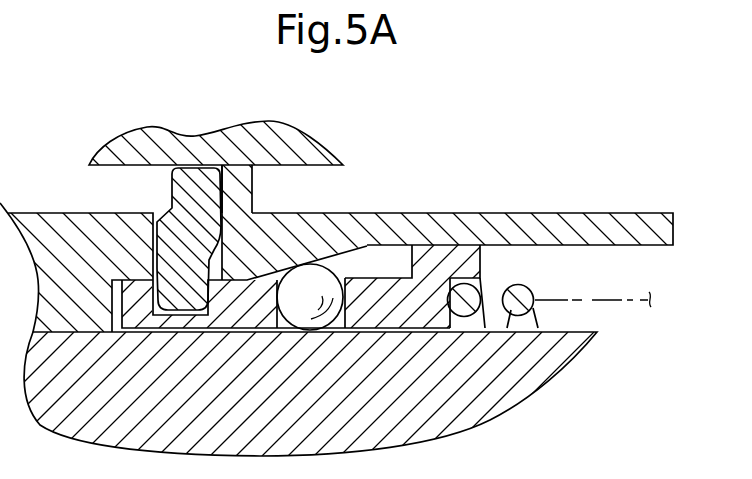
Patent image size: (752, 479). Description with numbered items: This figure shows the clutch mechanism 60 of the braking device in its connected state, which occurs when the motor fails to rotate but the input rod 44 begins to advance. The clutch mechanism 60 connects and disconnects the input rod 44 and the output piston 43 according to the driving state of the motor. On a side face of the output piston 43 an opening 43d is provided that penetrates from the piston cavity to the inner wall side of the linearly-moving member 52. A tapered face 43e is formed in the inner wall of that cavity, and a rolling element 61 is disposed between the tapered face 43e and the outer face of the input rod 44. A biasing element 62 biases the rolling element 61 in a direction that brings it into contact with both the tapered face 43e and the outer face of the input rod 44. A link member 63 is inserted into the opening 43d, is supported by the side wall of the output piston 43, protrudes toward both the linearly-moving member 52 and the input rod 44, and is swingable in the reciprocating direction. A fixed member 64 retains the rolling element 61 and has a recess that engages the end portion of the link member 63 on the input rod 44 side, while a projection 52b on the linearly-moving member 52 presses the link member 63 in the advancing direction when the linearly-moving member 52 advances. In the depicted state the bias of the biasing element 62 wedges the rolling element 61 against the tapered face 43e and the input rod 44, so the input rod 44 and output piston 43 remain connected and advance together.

The output piston 43 is at (512, 217).
The opening 43d is at (221, 200).
The tapered face 43e is at (364, 303).
The input rod 44 is at (515, 375).
The linearly-moving member 52 is at (160, 140).
The projection 52b is at (253, 190).
The clutch mechanism 60 is at (482, 168).
The rolling element 61 is at (289, 311).
The biasing element 62 is at (520, 292).
The link member 63 is at (173, 194).
The fixed member 64 is at (375, 358).